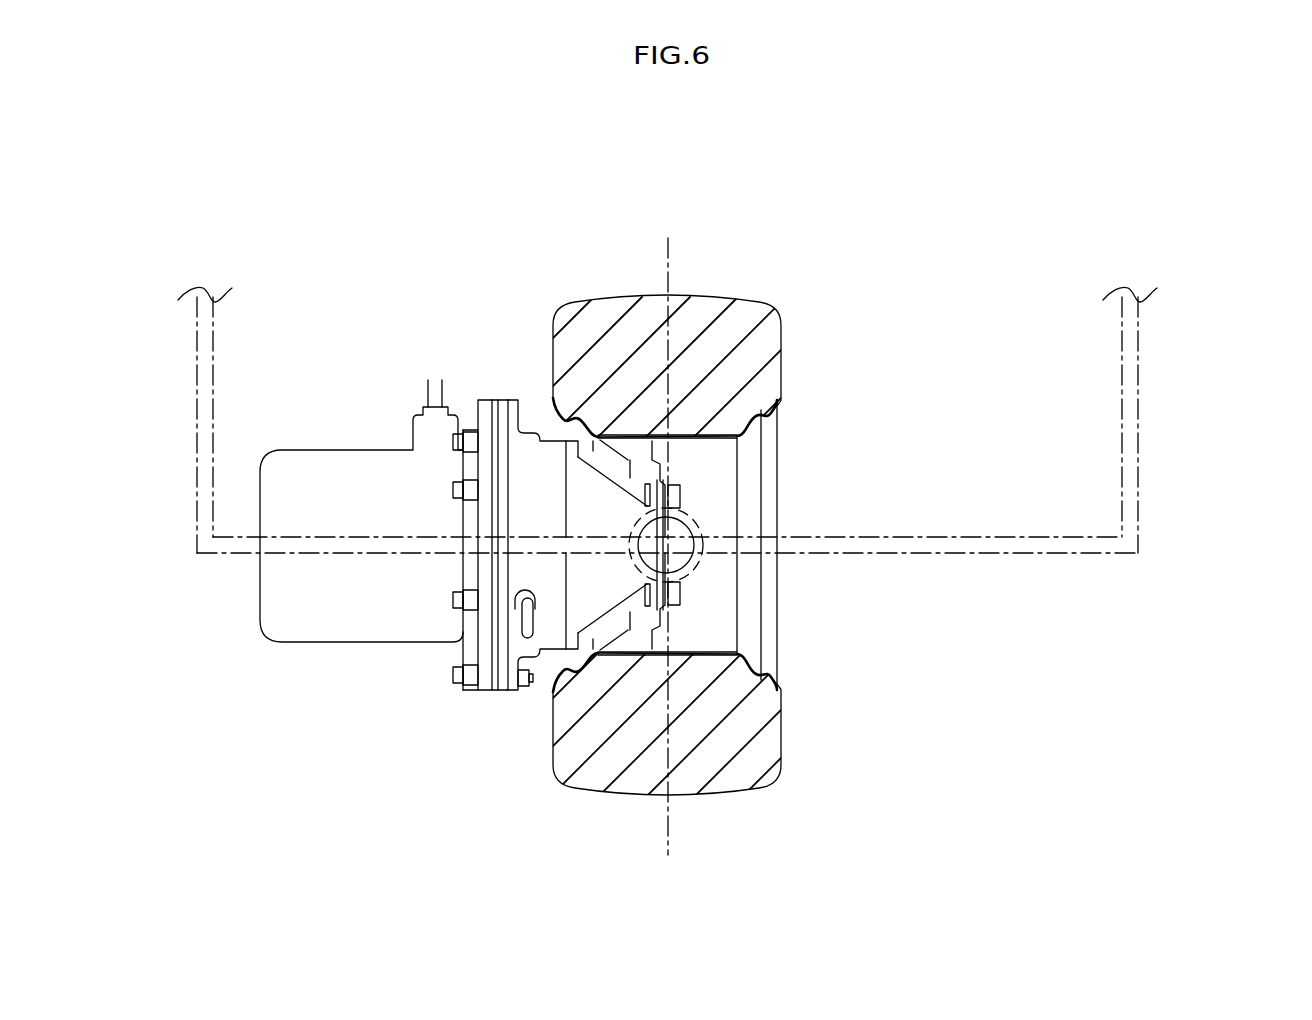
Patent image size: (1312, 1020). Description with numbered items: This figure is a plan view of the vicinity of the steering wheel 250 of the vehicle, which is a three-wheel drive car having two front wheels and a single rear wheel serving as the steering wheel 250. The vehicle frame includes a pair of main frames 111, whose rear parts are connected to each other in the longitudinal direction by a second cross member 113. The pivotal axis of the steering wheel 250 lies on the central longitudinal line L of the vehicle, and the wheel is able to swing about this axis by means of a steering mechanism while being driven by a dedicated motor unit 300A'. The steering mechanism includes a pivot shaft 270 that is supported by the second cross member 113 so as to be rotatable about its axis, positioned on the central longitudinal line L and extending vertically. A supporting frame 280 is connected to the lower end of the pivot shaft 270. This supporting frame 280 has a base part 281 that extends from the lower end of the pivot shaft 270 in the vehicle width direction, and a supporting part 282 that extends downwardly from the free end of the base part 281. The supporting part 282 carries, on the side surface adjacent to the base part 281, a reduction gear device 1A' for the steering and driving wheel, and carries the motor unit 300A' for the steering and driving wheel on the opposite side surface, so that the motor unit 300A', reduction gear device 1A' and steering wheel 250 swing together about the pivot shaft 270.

The main frame 111 is at (197, 417).
The second cross member 113 is at (978, 560).
The central longitudinal line L is at (670, 263).
The steering wheel 250 is at (822, 304).
The pivot shaft 270 is at (710, 517).
The reduction gear device 1A' is at (593, 457).
The motor unit 300A' is at (361, 475).
The supporting frame 280 is at (468, 786).
The base part 281 is at (548, 692).
The supporting part 282 is at (487, 683).